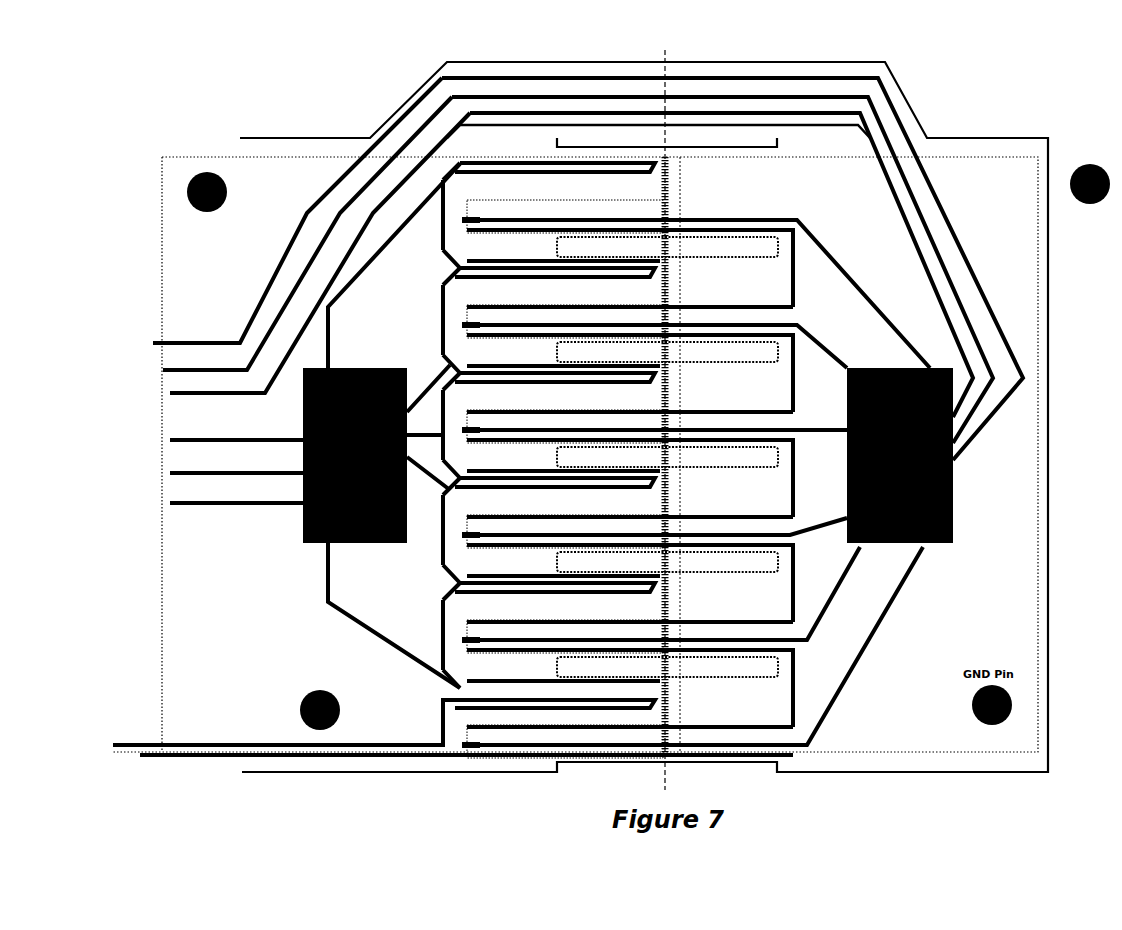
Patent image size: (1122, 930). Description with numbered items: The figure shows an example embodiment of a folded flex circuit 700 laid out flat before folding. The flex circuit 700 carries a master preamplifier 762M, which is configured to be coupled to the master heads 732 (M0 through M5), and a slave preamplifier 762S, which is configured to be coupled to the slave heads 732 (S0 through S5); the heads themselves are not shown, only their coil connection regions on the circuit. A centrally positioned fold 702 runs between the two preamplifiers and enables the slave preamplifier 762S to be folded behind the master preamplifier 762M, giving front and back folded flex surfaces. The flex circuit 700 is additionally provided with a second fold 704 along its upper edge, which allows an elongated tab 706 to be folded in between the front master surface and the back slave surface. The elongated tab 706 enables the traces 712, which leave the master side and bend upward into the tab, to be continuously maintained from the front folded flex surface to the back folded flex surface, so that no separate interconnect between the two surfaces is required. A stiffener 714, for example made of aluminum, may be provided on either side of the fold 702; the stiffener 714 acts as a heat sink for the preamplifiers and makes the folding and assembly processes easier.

The folded flex circuit 700 is at (922, 82).
The fold 702 is at (664, 46).
The second fold 704 is at (967, 135).
The elongated tab 706 is at (795, 62).
The traces 712 is at (373, 200).
The stiffener 714 is at (830, 162).
The heads 732 is at (521, 457).
The master preamplifier 762M is at (300, 515).
The slave preamplifier 762S is at (940, 548).